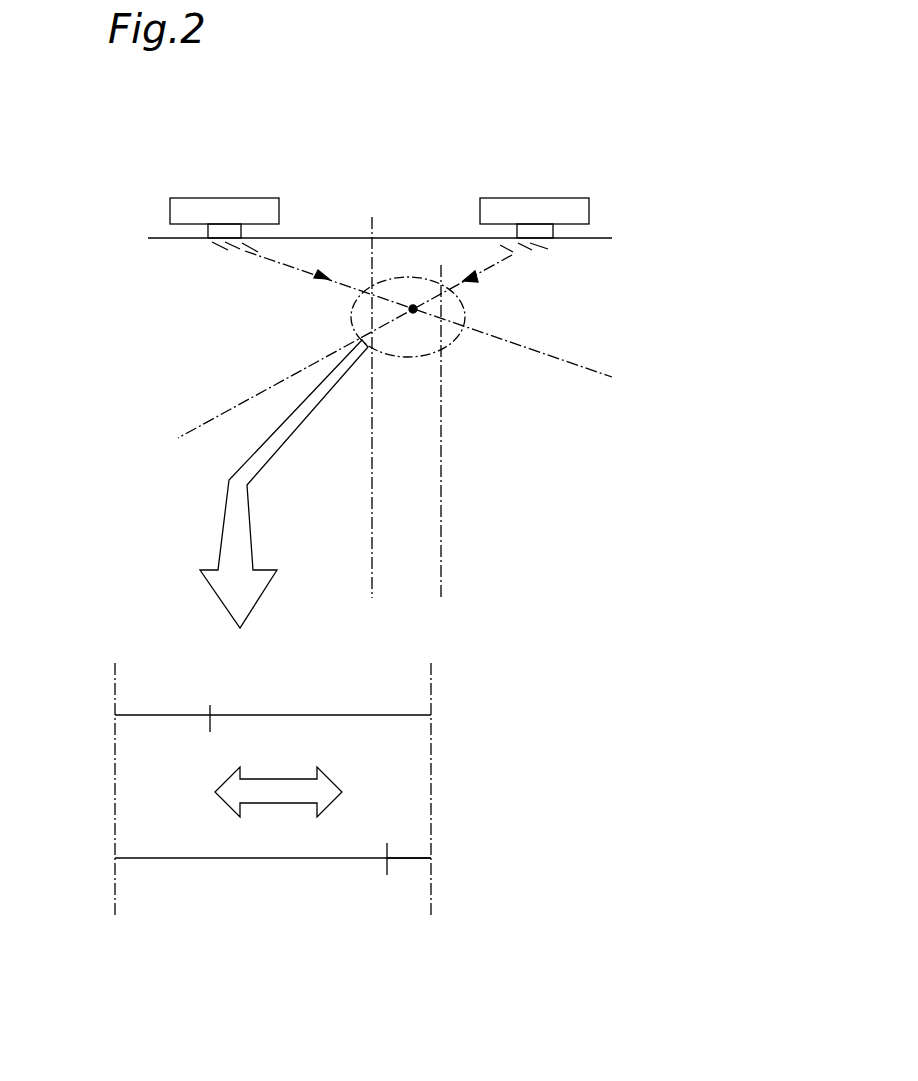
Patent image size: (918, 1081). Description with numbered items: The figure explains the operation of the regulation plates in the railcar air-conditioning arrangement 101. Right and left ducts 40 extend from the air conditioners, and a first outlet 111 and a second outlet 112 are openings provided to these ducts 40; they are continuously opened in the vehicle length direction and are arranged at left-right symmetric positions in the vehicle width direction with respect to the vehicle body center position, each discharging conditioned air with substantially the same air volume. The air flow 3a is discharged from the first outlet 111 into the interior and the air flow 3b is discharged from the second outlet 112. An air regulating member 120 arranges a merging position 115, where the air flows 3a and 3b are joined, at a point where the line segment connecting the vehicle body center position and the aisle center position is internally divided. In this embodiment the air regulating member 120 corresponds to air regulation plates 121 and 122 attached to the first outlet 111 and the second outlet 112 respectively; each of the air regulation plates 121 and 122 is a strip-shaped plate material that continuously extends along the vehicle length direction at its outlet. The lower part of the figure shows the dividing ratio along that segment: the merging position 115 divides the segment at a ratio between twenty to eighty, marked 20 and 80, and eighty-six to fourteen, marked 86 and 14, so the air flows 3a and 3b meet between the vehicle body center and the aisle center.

The printing apparatus 101 is at (670, 180).
The duct 40 is at (185, 203).
The first outlet 111 is at (217, 250).
The second outlet 112 is at (523, 250).
The air regulating member 120 is at (198, 251).
The air regulation plate 121 is at (228, 248).
The air regulation plate 122 is at (543, 245).
The air flow 3a is at (283, 265).
The air flow 3b is at (483, 273).
The merging position 115 is at (413, 309).
The first region 20 is at (273, 732).
The transport direction region 80 is at (278, 771).
The second region 86 is at (273, 876).
The end portion 14 is at (409, 879).